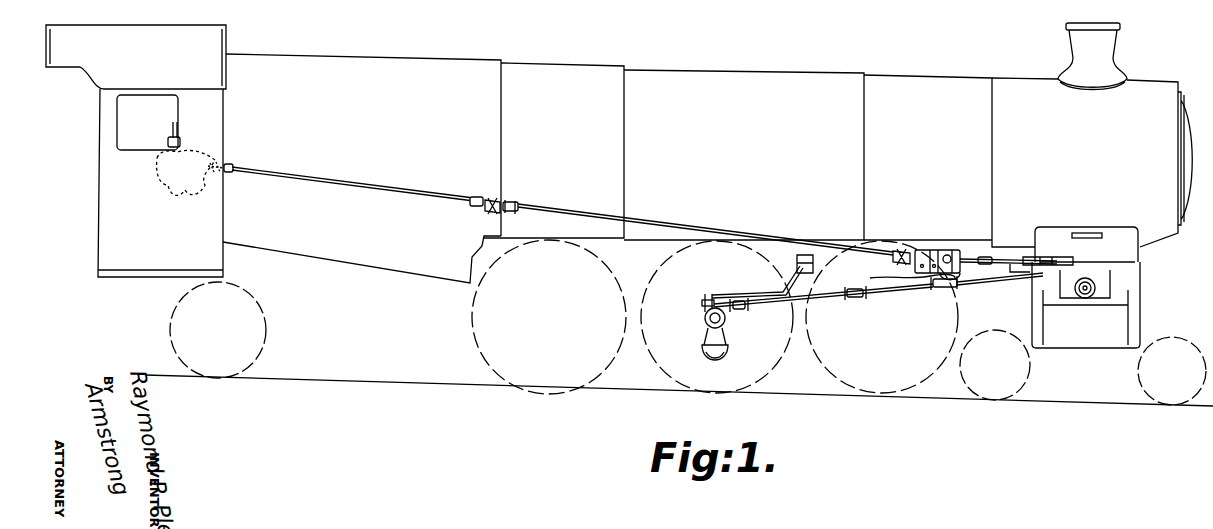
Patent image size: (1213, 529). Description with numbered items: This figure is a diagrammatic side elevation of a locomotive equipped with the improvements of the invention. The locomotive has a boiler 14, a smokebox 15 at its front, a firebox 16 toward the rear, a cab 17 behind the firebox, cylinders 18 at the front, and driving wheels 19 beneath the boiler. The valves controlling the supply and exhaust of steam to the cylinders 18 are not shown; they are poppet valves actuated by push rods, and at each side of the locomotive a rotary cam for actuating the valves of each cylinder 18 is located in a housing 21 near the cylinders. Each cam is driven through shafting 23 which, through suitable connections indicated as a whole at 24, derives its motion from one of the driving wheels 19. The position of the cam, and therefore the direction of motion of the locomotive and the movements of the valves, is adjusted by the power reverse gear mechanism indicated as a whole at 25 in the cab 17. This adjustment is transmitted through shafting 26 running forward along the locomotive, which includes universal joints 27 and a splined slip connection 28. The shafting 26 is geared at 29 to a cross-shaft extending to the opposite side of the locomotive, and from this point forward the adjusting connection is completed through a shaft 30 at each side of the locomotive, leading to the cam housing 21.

The boiler 14 is at (744, 155).
The smokebox 15 is at (1092, 135).
The firebox 16 is at (363, 145).
The cab 17 is at (136, 57).
The cylinders 18 is at (1086, 287).
The driving wheels 19 is at (822, 375).
The housing 21 is at (1100, 288).
The shafting 23 is at (822, 295).
The connections 24 is at (705, 310).
The power reverse gear mechanism 25 is at (163, 173).
The shafting 26 is at (393, 190).
The universal joints 27 is at (222, 166).
The splined slip connection 28 is at (510, 201).
The gearing 29 is at (947, 250).
The shaft 30 is at (998, 258).